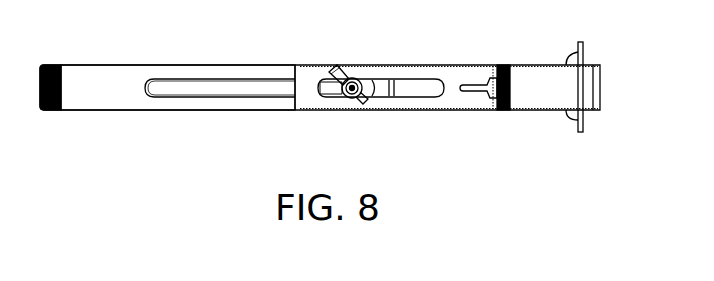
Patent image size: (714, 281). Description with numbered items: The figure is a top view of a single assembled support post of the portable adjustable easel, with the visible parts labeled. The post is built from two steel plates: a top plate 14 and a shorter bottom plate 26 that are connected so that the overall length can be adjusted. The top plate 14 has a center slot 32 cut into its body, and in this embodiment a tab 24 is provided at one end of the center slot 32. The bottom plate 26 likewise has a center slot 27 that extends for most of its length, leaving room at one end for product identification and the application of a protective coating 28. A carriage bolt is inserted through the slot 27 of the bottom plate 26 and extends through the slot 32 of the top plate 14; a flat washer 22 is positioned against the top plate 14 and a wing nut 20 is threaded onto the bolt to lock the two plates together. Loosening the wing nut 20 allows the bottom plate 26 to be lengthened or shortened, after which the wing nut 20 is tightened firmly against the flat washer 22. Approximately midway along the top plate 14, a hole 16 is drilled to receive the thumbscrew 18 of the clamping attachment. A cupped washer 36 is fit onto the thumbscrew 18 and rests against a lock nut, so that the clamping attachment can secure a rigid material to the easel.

The top plate 14 is at (600, 81).
The hole 16 is at (500, 64).
The thumbscrew 18 is at (472, 84).
The wing nut 20 is at (334, 69).
The flat washer 22 is at (356, 78).
The tab 24 is at (329, 94).
The bottom plate 26 is at (117, 93).
The center slot 27 is at (189, 93).
The protective coating 28 is at (53, 110).
The center slot 32 is at (425, 97).
The cupped washer 36 is at (576, 115).